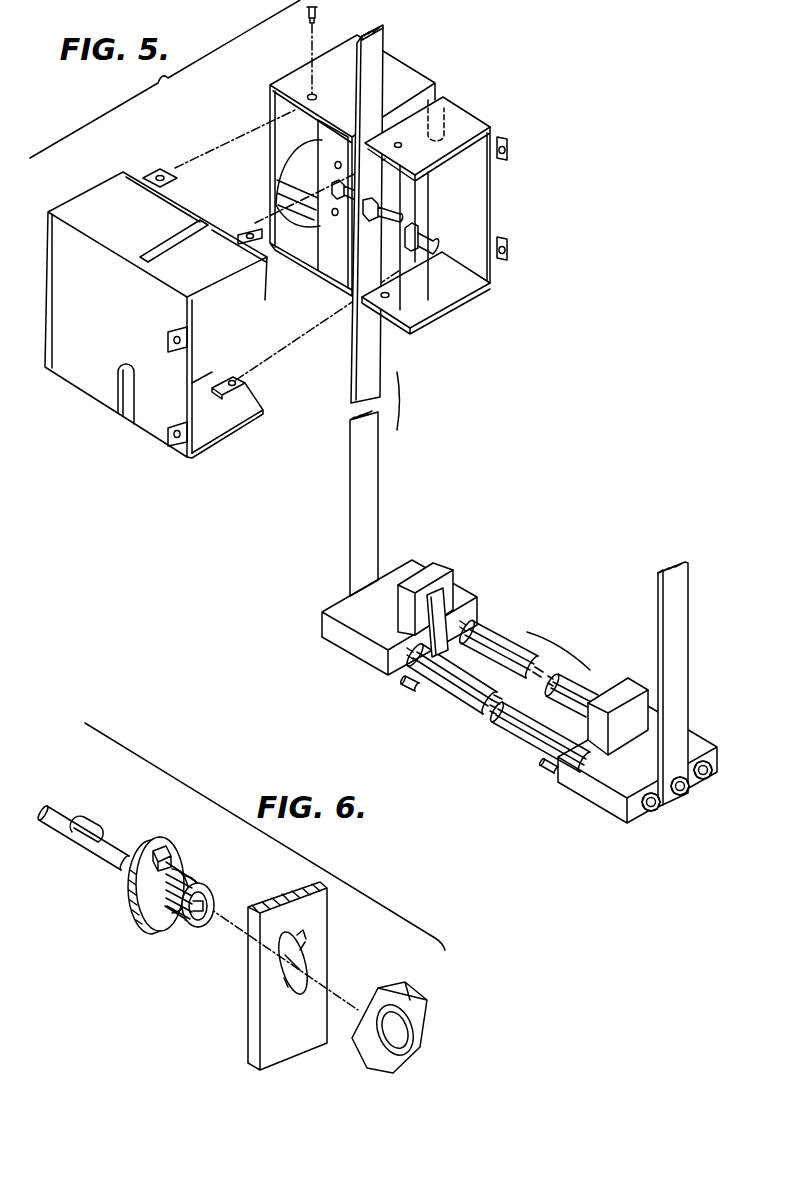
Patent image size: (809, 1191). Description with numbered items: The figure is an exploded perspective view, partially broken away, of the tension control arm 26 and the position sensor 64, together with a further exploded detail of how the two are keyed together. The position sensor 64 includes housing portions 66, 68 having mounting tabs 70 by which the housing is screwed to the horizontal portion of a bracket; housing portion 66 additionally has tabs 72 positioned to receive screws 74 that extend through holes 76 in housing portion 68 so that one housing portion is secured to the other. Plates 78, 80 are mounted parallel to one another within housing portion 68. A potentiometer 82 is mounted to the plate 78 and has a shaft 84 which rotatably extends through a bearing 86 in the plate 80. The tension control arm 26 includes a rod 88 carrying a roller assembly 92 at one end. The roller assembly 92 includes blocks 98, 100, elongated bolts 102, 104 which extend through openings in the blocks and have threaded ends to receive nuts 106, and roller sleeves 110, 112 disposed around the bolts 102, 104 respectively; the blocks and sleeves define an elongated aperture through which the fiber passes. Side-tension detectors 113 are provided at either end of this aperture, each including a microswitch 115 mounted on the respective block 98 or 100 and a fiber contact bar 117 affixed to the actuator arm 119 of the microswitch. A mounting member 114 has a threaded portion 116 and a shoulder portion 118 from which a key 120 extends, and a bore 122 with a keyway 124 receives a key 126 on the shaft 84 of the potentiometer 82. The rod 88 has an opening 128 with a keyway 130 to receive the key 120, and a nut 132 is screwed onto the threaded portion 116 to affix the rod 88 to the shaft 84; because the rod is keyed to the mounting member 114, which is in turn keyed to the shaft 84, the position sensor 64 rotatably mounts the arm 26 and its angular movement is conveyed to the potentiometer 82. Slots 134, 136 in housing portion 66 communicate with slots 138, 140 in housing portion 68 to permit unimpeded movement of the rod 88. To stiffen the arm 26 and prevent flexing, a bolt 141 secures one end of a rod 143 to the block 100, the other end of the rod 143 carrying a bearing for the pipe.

In FIG. 5, the tension control arm 26 is at (467, 455).
In FIG. 5, the position sensor 64 is at (545, 193).
In FIG. 5, the housing portion 66 is at (52, 218).
In FIG. 5, the housing portion 68 is at (470, 290).
In FIG. 5, the mounting tabs 70 is at (172, 350).
In FIG. 5, the tabs 72 is at (164, 170).
In FIG. 5, the screws 74 is at (318, 10).
In FIG. 5, the holes 76 is at (314, 93).
In FIG. 5, the plate 78 is at (310, 275).
In FIG. 5, the plate 80 is at (425, 192).
In FIG. 5, the potentiometer 82 is at (290, 162).
In FIG. 5, the shaft 84 is at (434, 238).
In FIG. 6, the shaft 84 is at (48, 826).
In FIG. 5, the bearing 86 is at (420, 228).
In FIG. 5, the rod 88 is at (354, 370).
In FIG. 6, the rod 88 is at (262, 1035).
In FIG. 5, the roller assembly 92 is at (586, 600).
In FIG. 5, the block 98 is at (340, 606).
In FIG. 5, the block 100 is at (583, 792).
In FIG. 5, the elongated bolt 102 is at (480, 708).
In FIG. 5, the elongated bolt 104 is at (534, 673).
In FIG. 5, the nuts 106 is at (650, 812).
In FIG. 5, the roller sleeve 110 is at (510, 735).
In FIG. 5, the roller sleeve 112 is at (590, 685).
In FIG. 5, the side-tension detectors 113 is at (502, 606).
In FIG. 6, the mounting member 114 is at (134, 958).
In FIG. 5, the microswitch 115 is at (440, 570).
In FIG. 6, the threaded portion 116 is at (200, 878).
In FIG. 5, the fiber contact bar 117 is at (403, 686).
In FIG. 6, the shoulder portion 118 is at (176, 858).
In FIG. 5, the actuator arm 119 is at (446, 590).
In FIG. 6, the key 120 is at (163, 850).
In FIG. 6, the bore 122 is at (197, 922).
In FIG. 6, the keyway 124 is at (212, 904).
In FIG. 6, the key 126 is at (90, 818).
In FIG. 6, the opening 128 is at (283, 995).
In FIG. 6, the keyway 130 is at (300, 930).
In FIG. 5, the nut 132 is at (340, 286).
In FIG. 6, the nut 132 is at (425, 1012).
In FIG. 5, the slot 134 is at (116, 372).
In FIG. 5, the slot 136 is at (178, 244).
In FIG. 5, the slot 138 is at (448, 110).
In FIG. 5, the slot 140 is at (410, 292).
In FIG. 5, the bolt 141 is at (682, 797).
In FIG. 5, the rod 143 is at (692, 604).